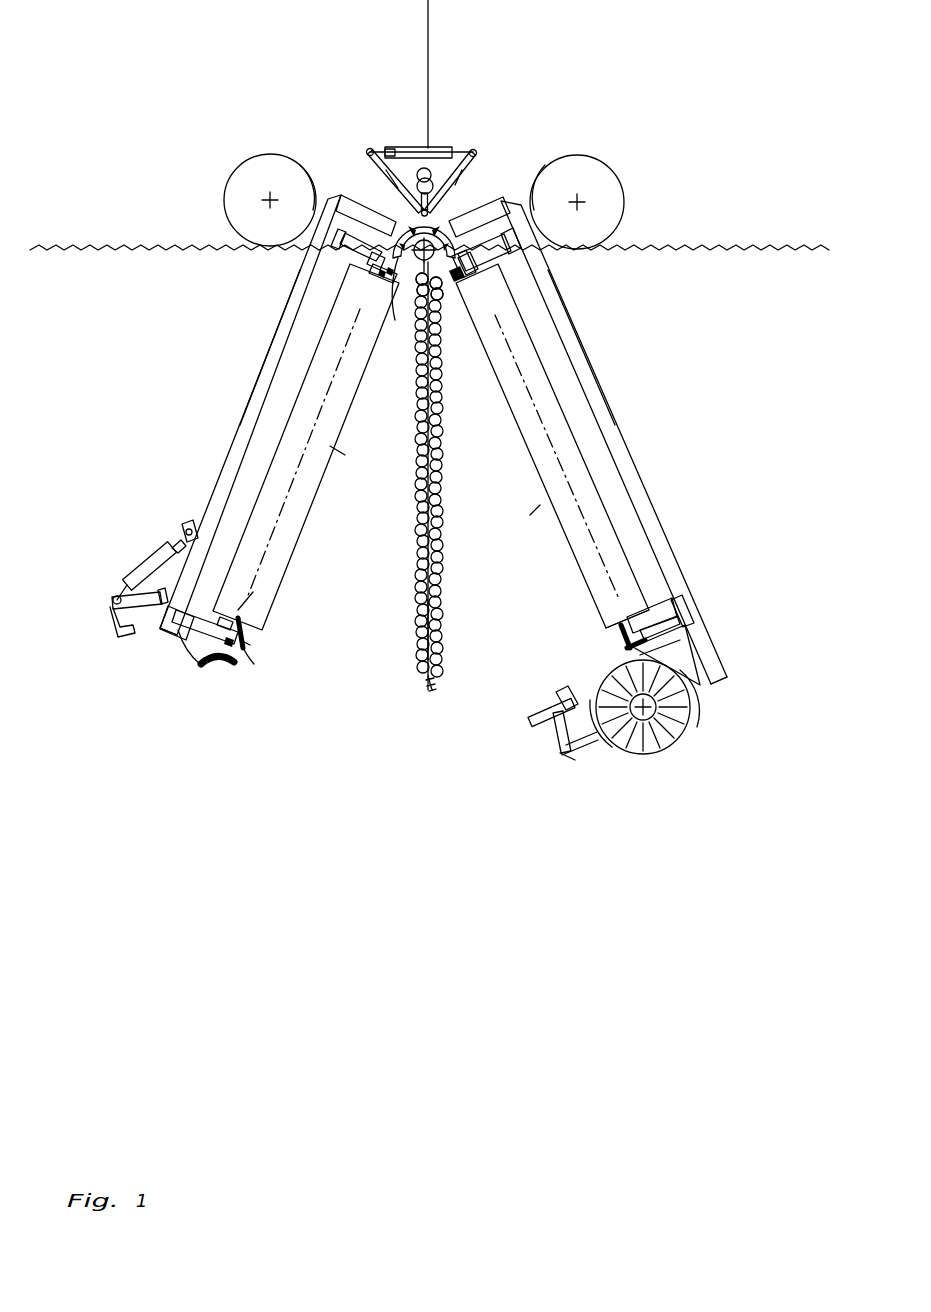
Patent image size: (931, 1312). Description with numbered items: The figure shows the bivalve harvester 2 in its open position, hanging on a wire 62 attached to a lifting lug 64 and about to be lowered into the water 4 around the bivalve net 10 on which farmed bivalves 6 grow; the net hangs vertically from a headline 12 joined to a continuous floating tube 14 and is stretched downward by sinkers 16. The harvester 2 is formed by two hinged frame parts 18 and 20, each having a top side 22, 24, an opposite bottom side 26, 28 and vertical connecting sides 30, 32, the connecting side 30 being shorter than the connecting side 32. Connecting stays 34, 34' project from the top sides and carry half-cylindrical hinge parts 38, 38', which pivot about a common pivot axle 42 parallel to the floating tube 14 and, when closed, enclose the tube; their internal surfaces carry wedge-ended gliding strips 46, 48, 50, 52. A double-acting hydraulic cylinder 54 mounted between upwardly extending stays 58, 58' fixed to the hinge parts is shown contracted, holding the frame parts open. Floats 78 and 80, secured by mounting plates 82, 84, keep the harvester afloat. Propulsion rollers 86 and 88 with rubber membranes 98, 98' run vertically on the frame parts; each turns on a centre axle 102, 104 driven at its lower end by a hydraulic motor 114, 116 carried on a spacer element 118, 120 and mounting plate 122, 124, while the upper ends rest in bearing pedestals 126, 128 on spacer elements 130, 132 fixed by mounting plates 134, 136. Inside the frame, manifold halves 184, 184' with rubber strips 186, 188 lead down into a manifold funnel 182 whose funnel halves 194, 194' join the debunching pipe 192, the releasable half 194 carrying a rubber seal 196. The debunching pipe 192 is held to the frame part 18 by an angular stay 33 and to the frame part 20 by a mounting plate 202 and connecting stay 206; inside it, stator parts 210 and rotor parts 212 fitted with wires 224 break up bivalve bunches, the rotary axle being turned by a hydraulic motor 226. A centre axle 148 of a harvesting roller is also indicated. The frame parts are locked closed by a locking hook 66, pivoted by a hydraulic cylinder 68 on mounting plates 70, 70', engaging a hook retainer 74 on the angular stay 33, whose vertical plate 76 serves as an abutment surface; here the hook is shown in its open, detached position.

The bivalve harvester 2 is at (162, 358).
The water 4 is at (710, 328).
The bivalves 6 is at (418, 598).
The bivalve net 10 is at (418, 545).
The headline 12 is at (413, 268).
The floating tube 14 is at (400, 268).
The sinkers 16 is at (424, 698).
The frame part 18 is at (213, 482).
The frame part 20 is at (643, 466).
The top side 22 is at (318, 183).
The top side 24 is at (515, 172).
The bottom side 26 is at (175, 648).
The bottom side 28 is at (728, 680).
The connecting side 30 is at (245, 432).
The connecting side 32 is at (610, 433).
The angular stay 33 is at (580, 762).
The connecting stay 34 is at (359, 192).
The connecting stay 34' is at (484, 193).
The hinge part 38 is at (340, 120).
The hinge part 38' is at (504, 134).
The pivot axle 42 is at (412, 150).
The gliding strip 46 is at (441, 300).
The gliding strip 48 is at (440, 290).
The gliding strip 50 is at (461, 415).
The gliding strip 52 is at (439, 285).
The hydraulic cylinder 54 is at (446, 148).
The stay 58 is at (368, 127).
The stay 58' is at (468, 141).
The wire 62 is at (430, 18).
The lifting lug 64 is at (412, 150).
The locking hook 66 is at (110, 627).
The hydraulic cylinder 68 is at (172, 548).
The mounting plate 70 is at (160, 522).
The mounting plate 70' is at (130, 631).
The hook retainer 74 is at (533, 722).
The plate 76 is at (575, 695).
The float 78 is at (233, 175).
The float 80 is at (620, 183).
The float axis 82 is at (315, 227).
The mounting plate 84 is at (545, 222).
The propulsion roller 86 is at (318, 458).
The propulsion roller 88 is at (545, 465).
The rubber membrane 98 is at (360, 461).
The rubber membrane 98' is at (515, 525).
The centre axle 102 is at (370, 288).
The centre axle 104 is at (486, 280).
The hydraulic motor 114 is at (226, 602).
The hydraulic motor 116 is at (660, 590).
The spacer element 118 is at (225, 550).
The spacer element 120 is at (672, 603).
The mounting plate 122 is at (160, 660).
The mounting plate 124 is at (690, 610).
The bearing pedestal 126 is at (335, 296).
The bearing pedestal 128 is at (490, 272).
The spacer element 130 is at (330, 272).
The spacer element 132 is at (485, 258).
The mounting plate 134 is at (325, 250).
The mounting plate 136 is at (488, 242).
The centre axle 148 is at (615, 750).
The manifold funnel 182 is at (700, 650).
The manifold half 184 is at (225, 347).
The manifold half 184' is at (616, 347).
The rubber strip 186 is at (392, 274).
The rubber strip 188 is at (490, 305).
The debunching pipe 192 is at (665, 740).
The funnel half 194 is at (210, 689).
The funnel half 194' is at (720, 639).
The rubber seal 196 is at (234, 672).
The mounting plate 202 is at (695, 705).
The connecting stay 206 is at (700, 690).
The stator part 210 is at (630, 740).
The rotor part 212 is at (685, 725).
The wires 224 is at (686, 735).
The hydraulic motor 226 is at (626, 748).